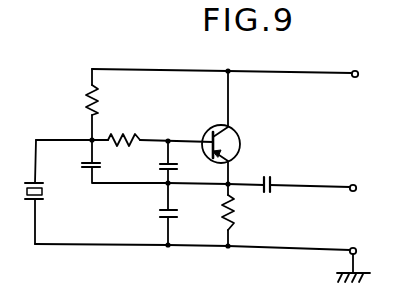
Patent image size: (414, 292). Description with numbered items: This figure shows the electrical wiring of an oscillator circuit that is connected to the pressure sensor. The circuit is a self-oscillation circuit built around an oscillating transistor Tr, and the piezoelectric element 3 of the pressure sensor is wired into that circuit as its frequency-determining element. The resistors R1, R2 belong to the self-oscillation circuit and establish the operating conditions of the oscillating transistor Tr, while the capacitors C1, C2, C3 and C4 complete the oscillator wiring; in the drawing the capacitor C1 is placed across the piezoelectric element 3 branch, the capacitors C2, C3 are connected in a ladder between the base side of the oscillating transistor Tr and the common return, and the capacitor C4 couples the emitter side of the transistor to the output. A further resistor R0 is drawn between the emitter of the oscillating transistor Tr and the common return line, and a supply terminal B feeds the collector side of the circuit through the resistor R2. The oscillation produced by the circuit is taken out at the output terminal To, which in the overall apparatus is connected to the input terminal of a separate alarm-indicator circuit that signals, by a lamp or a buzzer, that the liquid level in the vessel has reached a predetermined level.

The resistor R2 is at (86, 99).
The resistor R1 is at (129, 134).
The piezoelectric element 3 is at (26, 191).
The capacitor C1 is at (80, 167).
The capacitor C2 is at (161, 163).
The capacitor C3 is at (161, 211).
The capacitor C4 is at (270, 193).
The oscillating transistor Tr is at (241, 144).
The emitter resistor R0 is at (233, 211).
The power supply terminal + B is at (360, 89).
The output terminal To is at (357, 186).